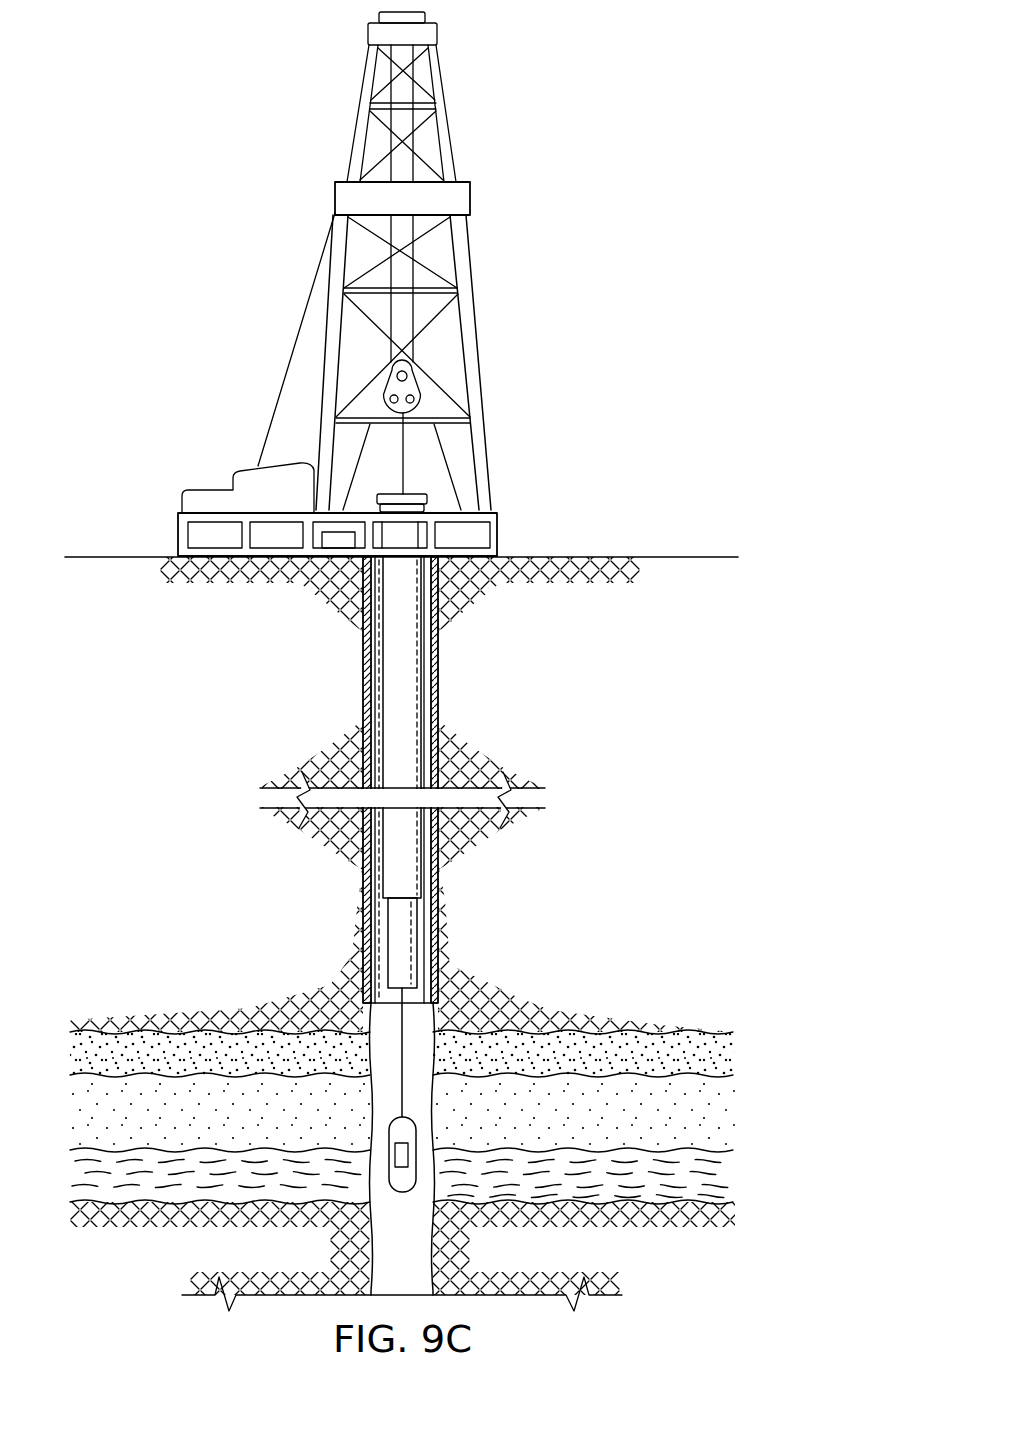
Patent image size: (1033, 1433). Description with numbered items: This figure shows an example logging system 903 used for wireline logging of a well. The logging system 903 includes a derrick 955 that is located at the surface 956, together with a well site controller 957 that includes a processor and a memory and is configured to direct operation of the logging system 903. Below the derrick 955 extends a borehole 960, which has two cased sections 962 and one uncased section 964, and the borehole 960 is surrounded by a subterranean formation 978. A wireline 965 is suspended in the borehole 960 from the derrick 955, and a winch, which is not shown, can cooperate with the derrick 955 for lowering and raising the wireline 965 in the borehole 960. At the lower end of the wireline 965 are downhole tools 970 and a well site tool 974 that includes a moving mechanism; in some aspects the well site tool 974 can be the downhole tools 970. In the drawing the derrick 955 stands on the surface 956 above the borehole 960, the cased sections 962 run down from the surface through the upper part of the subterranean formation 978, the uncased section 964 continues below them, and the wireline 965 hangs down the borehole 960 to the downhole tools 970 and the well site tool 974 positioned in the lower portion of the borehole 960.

The logging system 903 is at (238, 131).
The derrick 955 is at (478, 367).
The surface 956 is at (529, 557).
The well site controller 957 is at (338, 548).
The borehole 960 is at (363, 924).
The cased sections 962 is at (424, 851).
The uncased section 964 is at (383, 1252).
The wireline 965 is at (405, 1020).
The downhole tools 970 is at (416, 1121).
The well site tool 974 is at (398, 1155).
The subterranean formation 978 is at (757, 1127).